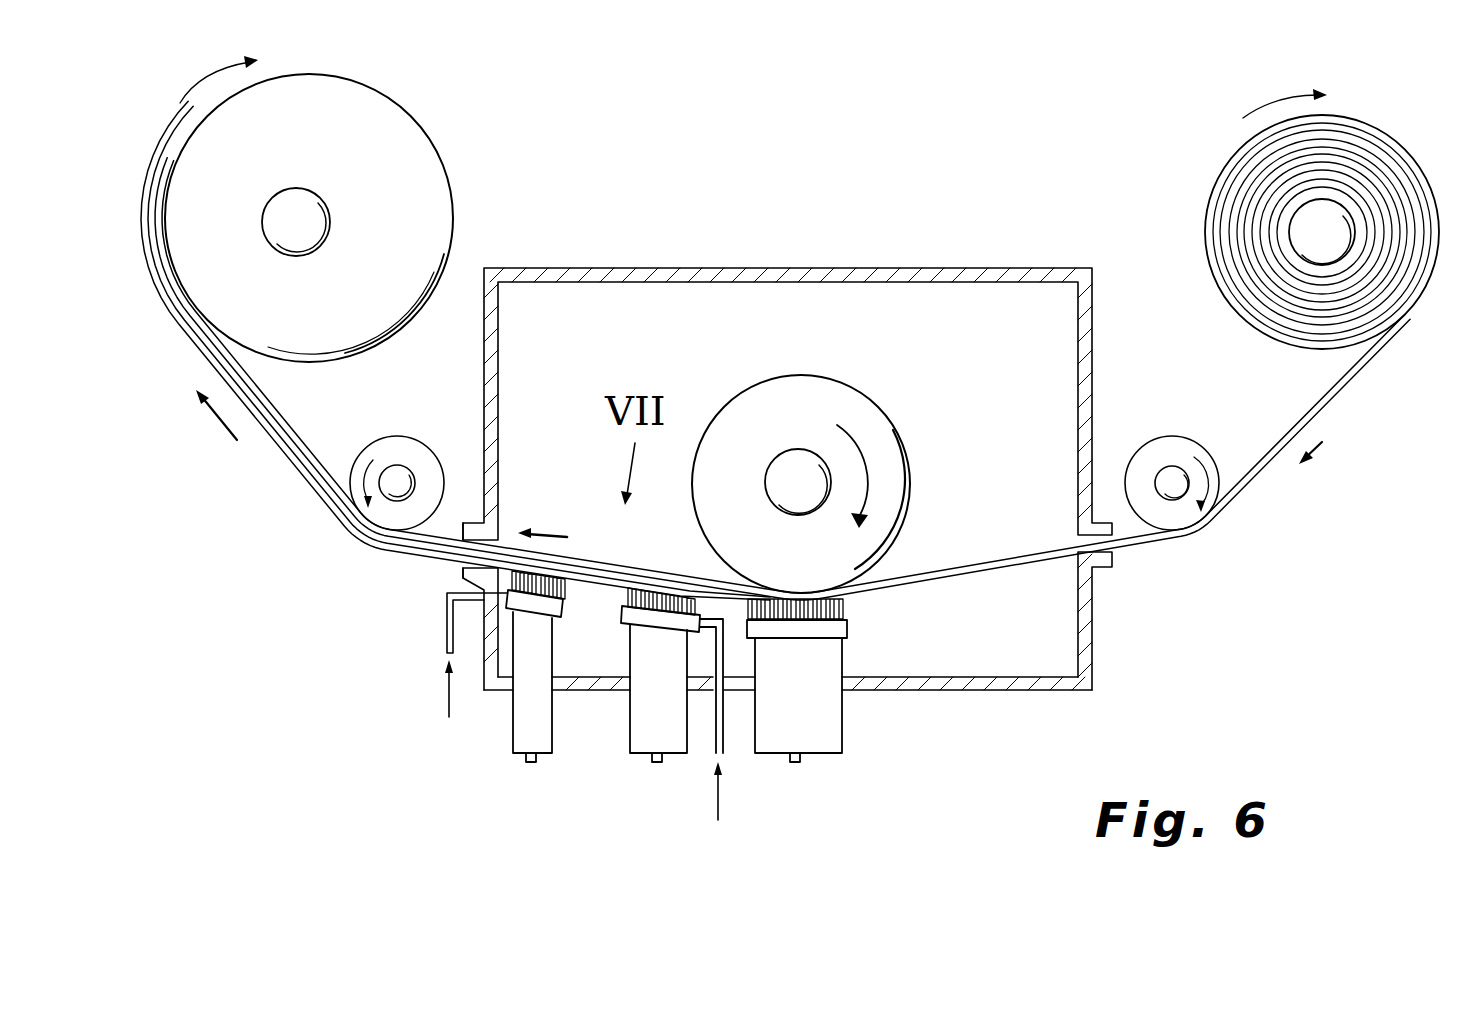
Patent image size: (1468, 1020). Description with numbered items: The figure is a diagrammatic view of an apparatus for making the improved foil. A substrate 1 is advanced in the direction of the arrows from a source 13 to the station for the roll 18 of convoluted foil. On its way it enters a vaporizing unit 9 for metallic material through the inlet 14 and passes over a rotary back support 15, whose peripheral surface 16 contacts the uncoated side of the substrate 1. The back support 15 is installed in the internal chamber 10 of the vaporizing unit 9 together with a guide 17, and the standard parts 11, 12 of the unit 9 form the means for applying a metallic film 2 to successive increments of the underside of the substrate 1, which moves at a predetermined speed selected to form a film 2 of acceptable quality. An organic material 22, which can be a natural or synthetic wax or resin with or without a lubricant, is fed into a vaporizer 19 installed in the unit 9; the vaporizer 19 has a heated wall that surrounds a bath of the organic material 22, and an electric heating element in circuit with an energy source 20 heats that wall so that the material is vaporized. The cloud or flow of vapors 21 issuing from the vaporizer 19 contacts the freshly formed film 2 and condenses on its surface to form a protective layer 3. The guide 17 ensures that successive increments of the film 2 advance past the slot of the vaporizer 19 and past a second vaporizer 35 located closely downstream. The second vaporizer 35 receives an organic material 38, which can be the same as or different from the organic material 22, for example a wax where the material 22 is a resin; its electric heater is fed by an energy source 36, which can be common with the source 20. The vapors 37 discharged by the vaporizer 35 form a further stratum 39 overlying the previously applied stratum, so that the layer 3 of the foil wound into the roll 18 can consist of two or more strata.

The substrate 1 is at (1288, 432).
The metallic film 2 is at (742, 597).
The protective layer 3 is at (600, 582).
The vaporizing unit 9 is at (869, 232).
The internal chamber 10 is at (1014, 471).
The standard part of the vaporizing unit 11 is at (842, 632).
The standard part of the vaporizing unit 12 is at (843, 603).
The source 13 is at (1377, 125).
The inlet 14 is at (1125, 559).
The rotary back support 15 is at (743, 397).
The peripheral surface 16 is at (862, 392).
The guide 17 is at (437, 578).
The roll of convoluted foil 18 is at (435, 192).
The vaporizer 19 is at (648, 610).
The energy source 20 is at (655, 763).
The cloud or flow of vapors 21 is at (625, 590).
The organic material 22 is at (720, 803).
The second vaporizer 35 is at (563, 603).
The energy source 36 is at (530, 763).
The cloud or flow of vapors 37 is at (573, 580).
The organic material 38 is at (447, 703).
The stratum 39 is at (288, 470).